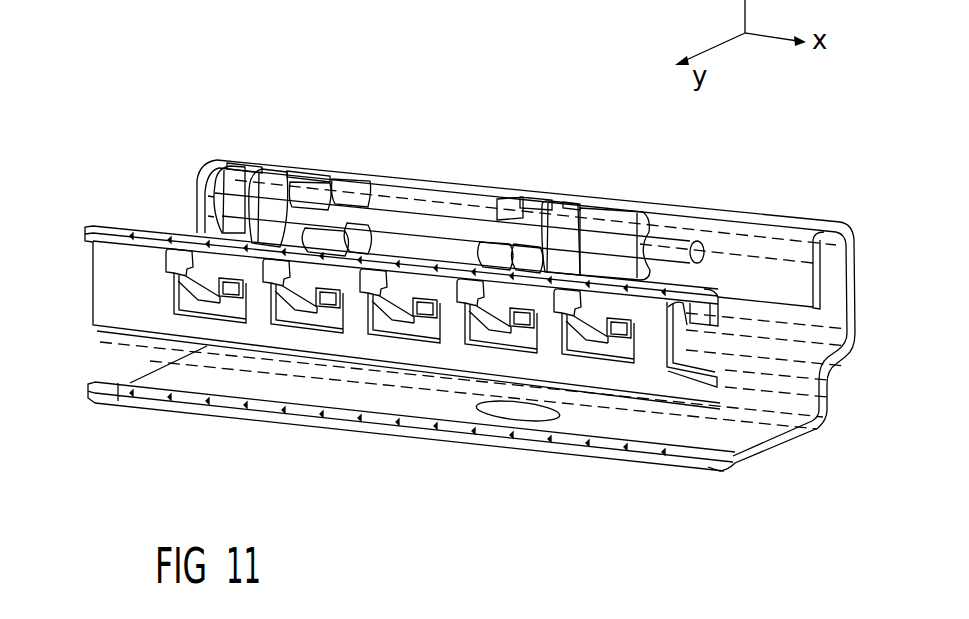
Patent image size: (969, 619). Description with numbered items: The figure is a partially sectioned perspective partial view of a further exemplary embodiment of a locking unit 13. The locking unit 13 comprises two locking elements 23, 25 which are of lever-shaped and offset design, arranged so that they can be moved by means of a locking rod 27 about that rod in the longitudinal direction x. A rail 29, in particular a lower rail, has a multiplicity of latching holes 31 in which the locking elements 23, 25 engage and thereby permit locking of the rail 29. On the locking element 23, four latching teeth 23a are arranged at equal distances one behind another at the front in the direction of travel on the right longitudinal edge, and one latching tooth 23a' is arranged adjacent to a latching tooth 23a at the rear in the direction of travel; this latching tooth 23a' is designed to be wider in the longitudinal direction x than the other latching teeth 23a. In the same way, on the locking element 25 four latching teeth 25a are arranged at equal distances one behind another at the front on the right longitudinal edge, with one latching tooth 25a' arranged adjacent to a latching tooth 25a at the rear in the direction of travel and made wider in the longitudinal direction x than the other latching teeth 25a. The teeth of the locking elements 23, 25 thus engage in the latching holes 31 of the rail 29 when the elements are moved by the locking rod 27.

The locking unit 13 is at (326, 112).
The locking element 23 is at (508, 208).
The latching tooth 23a is at (642, 423).
The latching tooth 23a' is at (252, 380).
The locking element 25 is at (600, 228).
The latching tooth 25a is at (560, 404).
The latching tooth 25a' is at (178, 213).
The locking rod 27 is at (414, 218).
The rail 29 is at (148, 258).
The latching hole 31 is at (192, 307).